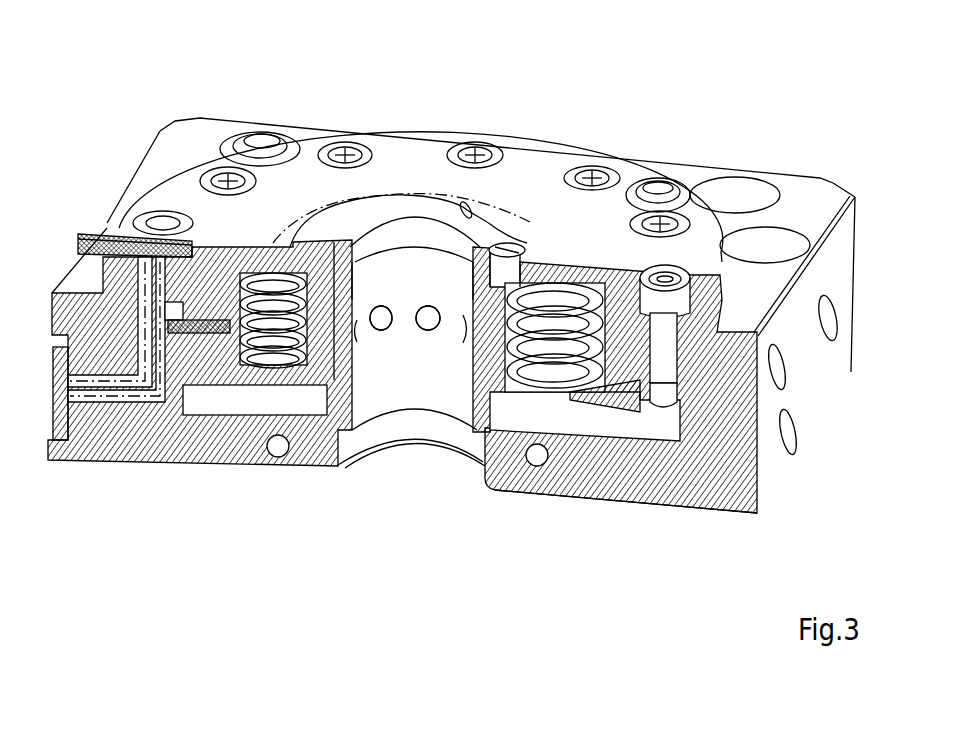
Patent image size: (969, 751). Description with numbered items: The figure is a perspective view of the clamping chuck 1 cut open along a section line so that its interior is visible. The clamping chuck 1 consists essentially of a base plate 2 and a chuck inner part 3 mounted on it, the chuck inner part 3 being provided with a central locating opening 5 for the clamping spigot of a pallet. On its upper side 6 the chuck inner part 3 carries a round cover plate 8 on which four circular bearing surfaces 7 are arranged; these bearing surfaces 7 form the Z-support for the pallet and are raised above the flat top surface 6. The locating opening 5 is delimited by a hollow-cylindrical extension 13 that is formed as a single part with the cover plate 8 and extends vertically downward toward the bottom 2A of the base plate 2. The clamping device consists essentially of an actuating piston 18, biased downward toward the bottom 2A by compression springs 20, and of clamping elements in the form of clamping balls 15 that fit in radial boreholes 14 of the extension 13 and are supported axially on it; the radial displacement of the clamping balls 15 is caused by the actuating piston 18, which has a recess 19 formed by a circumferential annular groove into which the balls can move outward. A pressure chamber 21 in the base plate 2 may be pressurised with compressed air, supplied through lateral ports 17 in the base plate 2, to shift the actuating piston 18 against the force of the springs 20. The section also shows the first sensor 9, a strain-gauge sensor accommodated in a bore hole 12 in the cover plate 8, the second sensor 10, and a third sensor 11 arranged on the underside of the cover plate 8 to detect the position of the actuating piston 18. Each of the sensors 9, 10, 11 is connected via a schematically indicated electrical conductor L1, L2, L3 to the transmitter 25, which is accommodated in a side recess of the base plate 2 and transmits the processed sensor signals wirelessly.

The clamping chuck 1 is at (530, 72).
The base plate 2 is at (656, 492).
The bottom of the base plate 2A is at (567, 474).
The chuck inner part 3 is at (418, 138).
The locating opening 5 is at (427, 226).
The upper side 6 is at (550, 158).
The circular bearing surfaces 7 is at (277, 142).
The cover plate 8 is at (708, 290).
The first sensor 9 is at (530, 235).
The second sensor 10 is at (85, 233).
The third sensor 11 is at (212, 320).
The bore hole 12 is at (500, 268).
The hollow-cylindrical extension 13 is at (355, 291).
The radial boreholes 14 is at (392, 325).
The clamping balls 15 is at (383, 331).
The lateral ports 17 is at (763, 345).
The actuating piston 18 is at (223, 378).
The recess 19 is at (355, 367).
The compression springs 20 is at (270, 358).
The pressure chamber 21 is at (570, 432).
The transmitter 25 is at (56, 373).
The electrical conductor L1 is at (392, 194).
The electrical conductor L2 is at (103, 272).
The electrical conductor L3 is at (157, 404).